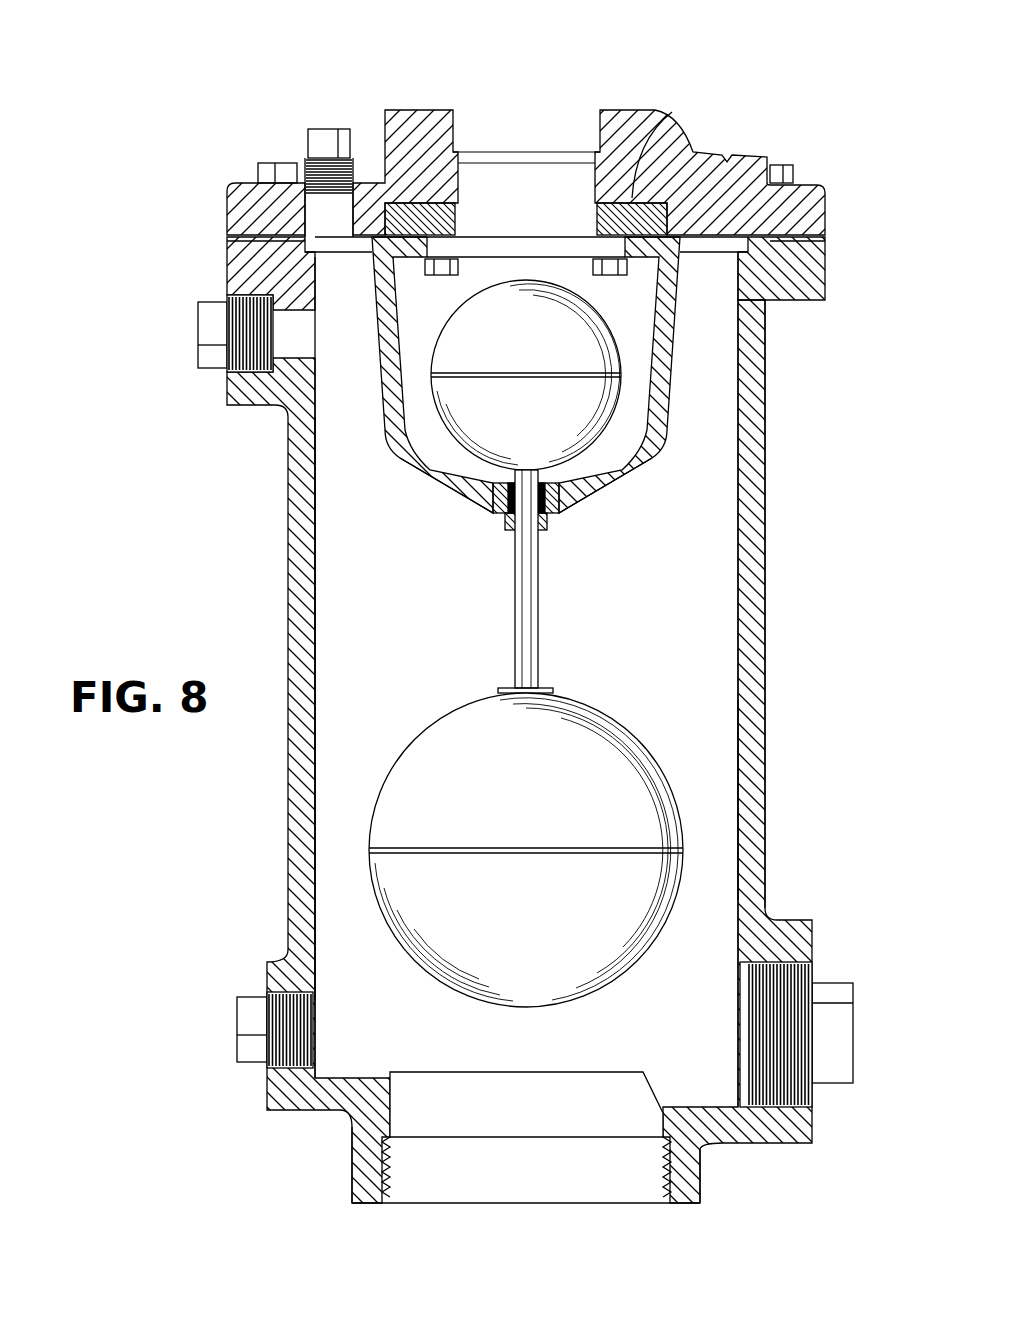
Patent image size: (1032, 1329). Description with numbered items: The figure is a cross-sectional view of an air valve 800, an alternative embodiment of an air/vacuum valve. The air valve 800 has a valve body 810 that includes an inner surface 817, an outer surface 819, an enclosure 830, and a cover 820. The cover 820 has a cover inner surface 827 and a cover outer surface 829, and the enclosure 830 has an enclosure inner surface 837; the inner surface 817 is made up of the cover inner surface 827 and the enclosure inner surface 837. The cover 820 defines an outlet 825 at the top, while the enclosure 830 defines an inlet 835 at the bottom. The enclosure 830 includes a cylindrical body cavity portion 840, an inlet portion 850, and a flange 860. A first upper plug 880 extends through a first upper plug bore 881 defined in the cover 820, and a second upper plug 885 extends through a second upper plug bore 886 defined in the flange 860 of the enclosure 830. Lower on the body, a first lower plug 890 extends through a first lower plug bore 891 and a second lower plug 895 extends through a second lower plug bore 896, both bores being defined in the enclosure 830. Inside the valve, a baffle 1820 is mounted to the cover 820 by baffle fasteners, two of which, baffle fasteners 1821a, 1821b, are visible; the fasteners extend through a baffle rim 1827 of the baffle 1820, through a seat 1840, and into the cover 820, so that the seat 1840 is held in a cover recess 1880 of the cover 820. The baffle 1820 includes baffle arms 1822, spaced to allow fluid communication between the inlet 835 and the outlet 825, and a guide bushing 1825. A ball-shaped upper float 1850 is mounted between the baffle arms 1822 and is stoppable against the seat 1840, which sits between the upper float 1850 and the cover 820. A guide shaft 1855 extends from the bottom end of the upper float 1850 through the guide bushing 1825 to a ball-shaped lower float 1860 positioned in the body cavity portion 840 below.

The air valve 800 is at (708, 79).
The valve body 810 is at (774, 708).
The inner surface 817 is at (526, 679).
The outer surface 819 is at (774, 777).
The cover 820 is at (403, 128).
The outlet 825 is at (540, 108).
The cover inner surface 827 is at (716, 250).
The cover outer surface 829 is at (652, 98).
The enclosure 830 is at (290, 790).
The inlet 835 is at (468, 1196).
The enclosure inner surface 837 is at (325, 693).
The body cavity portion 840 is at (765, 470).
The inlet portion 850 is at (695, 1195).
The flange 860 is at (807, 263).
The first upper plug 880 is at (324, 130).
The first upper plug bore 881 is at (303, 170).
The second upper plug 885 is at (207, 347).
The second upper plug bore 886 is at (253, 300).
The first lower plug 890 is at (843, 1027).
The first lower plug bore 891 is at (778, 963).
The second lower plug 895 is at (250, 1013).
The second lower plug bore 896 is at (292, 1068).
The baffle 1820 is at (673, 378).
The baffle fastener 1821a is at (448, 275).
The baffle fastener 1821b is at (616, 275).
The baffle arms 1822 is at (652, 468).
The guide bushing 1825 is at (547, 525).
The baffle rim 1827 is at (697, 237).
The seat 1840 is at (633, 223).
The upper float 1850 is at (508, 430).
The guide shaft 1855 is at (530, 597).
The lower float 1860 is at (410, 815).
The cover recess 1880 is at (647, 217).